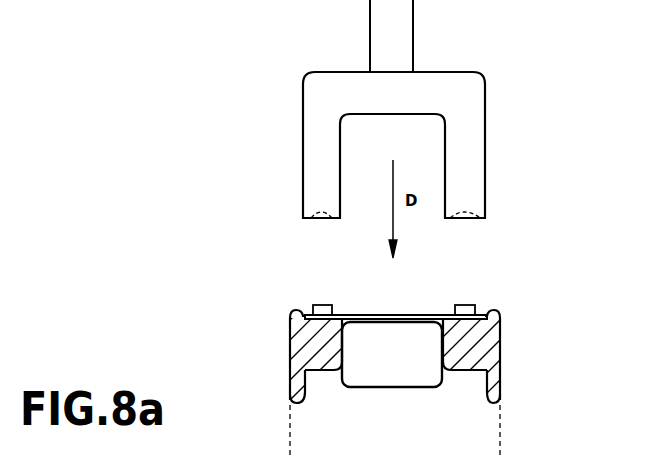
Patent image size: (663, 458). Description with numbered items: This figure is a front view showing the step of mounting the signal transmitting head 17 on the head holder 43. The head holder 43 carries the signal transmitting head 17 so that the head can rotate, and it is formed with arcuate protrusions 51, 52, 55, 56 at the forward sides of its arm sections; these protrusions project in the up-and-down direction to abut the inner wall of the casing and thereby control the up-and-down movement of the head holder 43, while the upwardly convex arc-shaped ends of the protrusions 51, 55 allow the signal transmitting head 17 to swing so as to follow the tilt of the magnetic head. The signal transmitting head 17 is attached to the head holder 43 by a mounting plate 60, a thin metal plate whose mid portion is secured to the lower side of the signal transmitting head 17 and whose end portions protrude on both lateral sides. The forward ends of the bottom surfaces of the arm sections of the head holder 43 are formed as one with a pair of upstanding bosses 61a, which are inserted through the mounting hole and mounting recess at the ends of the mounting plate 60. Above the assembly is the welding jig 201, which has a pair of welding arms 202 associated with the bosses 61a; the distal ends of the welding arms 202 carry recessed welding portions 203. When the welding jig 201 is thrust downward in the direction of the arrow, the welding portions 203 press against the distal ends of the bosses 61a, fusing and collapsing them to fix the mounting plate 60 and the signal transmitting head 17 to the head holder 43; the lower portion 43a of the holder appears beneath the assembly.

The welding jig 201 is at (405, 32).
The welding arms 202 is at (333, 157).
The recessed welding portions 203 is at (325, 219).
The mounting plate 60 is at (415, 316).
The upstanding bosses 61a is at (322, 306).
The arcuate protrusion 52 is at (290, 311).
The arcuate protrusion 51 is at (307, 402).
The arcuate protrusion 56 is at (500, 312).
The arcuate protrusion 55 is at (488, 393).
The signal transmitting head 17 is at (385, 375).
The head holder 43 is at (460, 370).
The bottom portion 43a is at (392, 422).